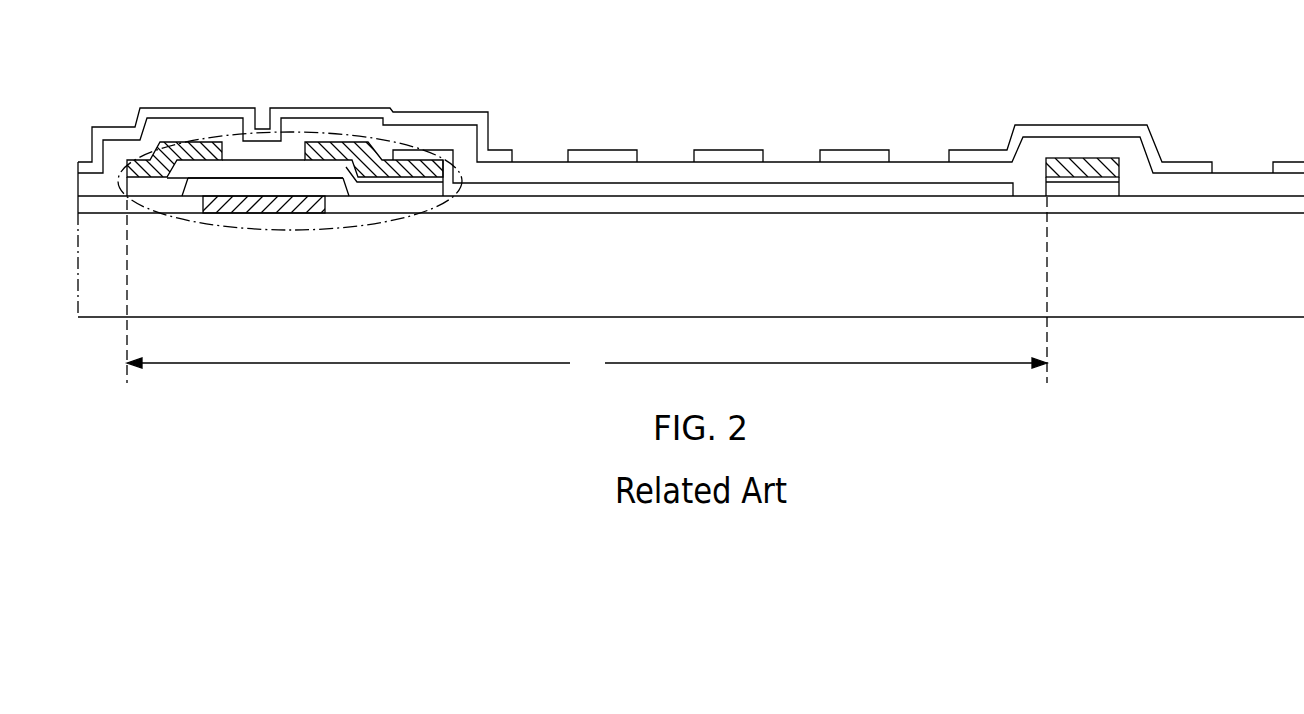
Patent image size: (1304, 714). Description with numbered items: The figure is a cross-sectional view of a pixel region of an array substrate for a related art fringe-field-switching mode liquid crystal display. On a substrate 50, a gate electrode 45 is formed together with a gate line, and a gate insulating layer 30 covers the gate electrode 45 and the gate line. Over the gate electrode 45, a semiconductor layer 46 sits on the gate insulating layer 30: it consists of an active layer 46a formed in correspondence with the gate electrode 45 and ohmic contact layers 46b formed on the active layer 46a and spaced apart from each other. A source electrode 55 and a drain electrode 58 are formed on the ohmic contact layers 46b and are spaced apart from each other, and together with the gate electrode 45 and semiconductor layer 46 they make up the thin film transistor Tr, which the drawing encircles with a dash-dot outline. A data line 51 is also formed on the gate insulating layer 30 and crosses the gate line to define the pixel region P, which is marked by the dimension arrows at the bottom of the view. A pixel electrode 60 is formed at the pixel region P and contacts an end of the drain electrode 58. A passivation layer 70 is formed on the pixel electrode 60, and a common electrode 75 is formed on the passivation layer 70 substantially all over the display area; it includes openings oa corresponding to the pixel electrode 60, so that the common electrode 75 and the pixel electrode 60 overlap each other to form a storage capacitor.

The gate insulating layer 30 is at (666, 205).
The gate electrode 45 is at (262, 214).
The semiconductor layer 46 is at (285, 232).
The active layer 46a is at (367, 190).
The ohmic contact layers 46b is at (402, 178).
The substrate 50 is at (1295, 308).
The data line 51 is at (1092, 158).
The source electrode 55 is at (190, 145).
The drain electrode 58 is at (333, 146).
The pixel electrode 60 is at (768, 188).
The passivation layer 70 is at (433, 140).
The common electrode 75 is at (460, 120).
The openings oa is at (540, 152).
The thin film transistor Tr is at (200, 228).
The pixel region P is at (587, 290).